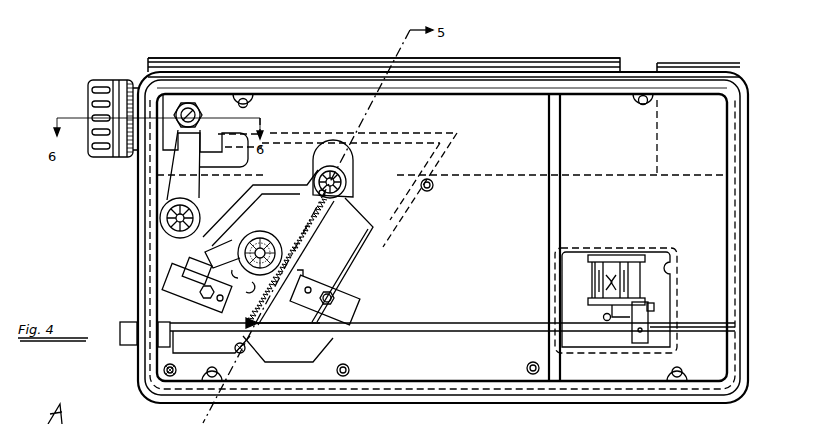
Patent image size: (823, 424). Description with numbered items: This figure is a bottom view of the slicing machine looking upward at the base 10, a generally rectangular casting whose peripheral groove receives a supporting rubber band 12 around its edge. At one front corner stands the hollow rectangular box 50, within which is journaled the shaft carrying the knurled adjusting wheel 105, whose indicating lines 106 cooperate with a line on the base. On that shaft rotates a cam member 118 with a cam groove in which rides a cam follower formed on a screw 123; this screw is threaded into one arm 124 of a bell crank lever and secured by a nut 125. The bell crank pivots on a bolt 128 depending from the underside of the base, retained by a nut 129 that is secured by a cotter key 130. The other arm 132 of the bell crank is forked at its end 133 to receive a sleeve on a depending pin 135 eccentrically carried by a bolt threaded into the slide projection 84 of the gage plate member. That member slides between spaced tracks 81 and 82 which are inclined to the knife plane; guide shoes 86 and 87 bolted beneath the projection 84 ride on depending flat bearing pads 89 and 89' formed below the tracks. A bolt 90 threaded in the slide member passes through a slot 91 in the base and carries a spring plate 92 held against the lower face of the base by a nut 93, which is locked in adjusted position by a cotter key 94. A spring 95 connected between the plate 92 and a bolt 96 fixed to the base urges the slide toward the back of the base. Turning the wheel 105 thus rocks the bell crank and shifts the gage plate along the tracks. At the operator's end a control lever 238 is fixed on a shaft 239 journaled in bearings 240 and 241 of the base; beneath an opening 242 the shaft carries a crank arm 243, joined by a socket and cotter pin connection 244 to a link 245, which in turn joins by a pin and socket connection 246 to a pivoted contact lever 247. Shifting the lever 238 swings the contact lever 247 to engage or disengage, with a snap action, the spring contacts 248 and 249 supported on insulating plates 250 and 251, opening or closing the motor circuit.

The base 10 is at (748, 97).
The supporting rubber band 12 is at (740, 127).
The hollow rectangular box 50 is at (165, 66).
The indicating lines 106 is at (128, 80).
The knurled adjusting wheel 105 is at (103, 157).
The cam member 118 is at (213, 93).
The screw 123 is at (183, 100).
The arm of bell crank lever 124 is at (192, 153).
The nut 125 is at (195, 108).
The bolt 128 is at (160, 238).
The nut 129 is at (165, 223).
The cotter key 130 is at (167, 213).
The track 81 is at (236, 193).
The arm of bell crank lever 132 is at (243, 226).
The forked end 133 is at (233, 277).
The depending pin 135 is at (255, 290).
The guide shoe 86 is at (205, 302).
The bearing pad 89 is at (187, 269).
The bearing pad 89' is at (351, 297).
The guide shoe 87 is at (327, 292).
The bolt 90 is at (292, 261).
The spring 95 is at (303, 244).
The track 82 is at (378, 250).
The projection 84 is at (288, 335).
The slot 91 is at (343, 163).
The spring plate 92 is at (353, 173).
The nut 93 is at (348, 182).
The cotter key 94 is at (313, 187).
The bolt 96 is at (250, 346).
The shaft 239 is at (458, 330).
The bearing 240 is at (145, 330).
The control lever 238 is at (130, 344).
The bearing 241 is at (740, 327).
The opening 242 is at (675, 265).
The crank arm 243 is at (640, 345).
The socket and cotter pin connection 244 is at (645, 315).
The link 245 is at (657, 310).
The pin and socket connection 246 is at (603, 317).
The contact lever 247 is at (615, 337).
The spring contact 248 is at (598, 257).
The spring contact 249 is at (627, 270).
The insulating plate 250 is at (613, 258).
The insulating plate 251 is at (590, 304).